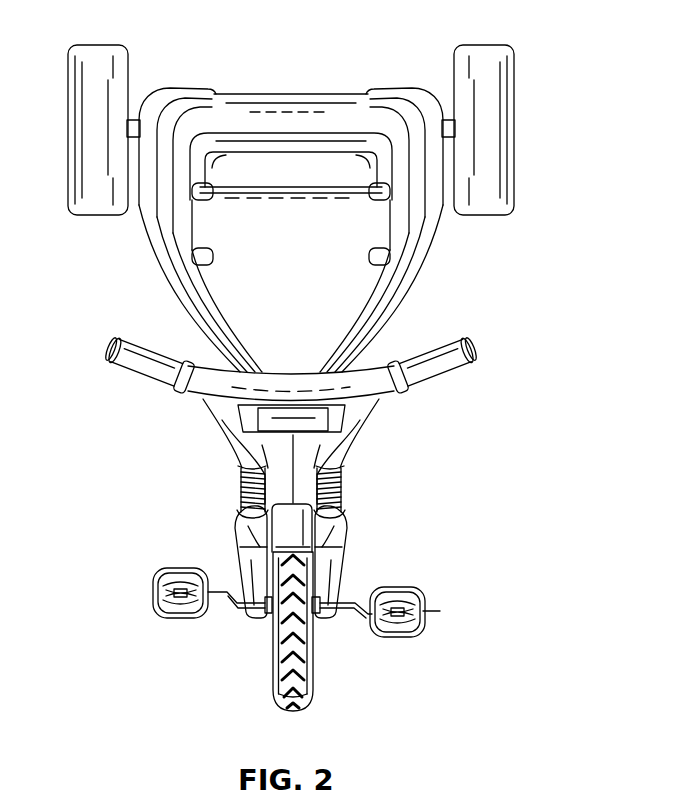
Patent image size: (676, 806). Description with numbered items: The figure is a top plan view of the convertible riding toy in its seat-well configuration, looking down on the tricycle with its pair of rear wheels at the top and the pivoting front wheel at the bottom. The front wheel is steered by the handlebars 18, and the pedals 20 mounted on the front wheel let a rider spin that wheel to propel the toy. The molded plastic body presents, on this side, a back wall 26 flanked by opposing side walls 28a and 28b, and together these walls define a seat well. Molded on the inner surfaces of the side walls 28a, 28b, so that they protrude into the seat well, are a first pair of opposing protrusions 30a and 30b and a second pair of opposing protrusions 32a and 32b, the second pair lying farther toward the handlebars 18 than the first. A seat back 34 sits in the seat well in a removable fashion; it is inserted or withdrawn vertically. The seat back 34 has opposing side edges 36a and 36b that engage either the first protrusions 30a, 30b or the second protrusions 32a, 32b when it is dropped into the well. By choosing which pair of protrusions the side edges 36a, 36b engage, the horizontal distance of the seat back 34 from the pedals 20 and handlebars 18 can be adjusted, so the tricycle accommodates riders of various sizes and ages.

The handlebars 18 is at (443, 373).
The pedals 20 is at (424, 612).
The back wall 26 is at (292, 93).
The side wall 28a is at (157, 204).
The side wall 28b is at (420, 214).
The first opposing protrusion 30a is at (201, 203).
The first opposing protrusion 30b is at (382, 203).
The second opposing protrusion 32a is at (187, 296).
The second opposing protrusion 32b is at (398, 288).
The seat back 34 is at (336, 128).
The side edge 36a is at (193, 184).
The side edge 36b is at (377, 183).